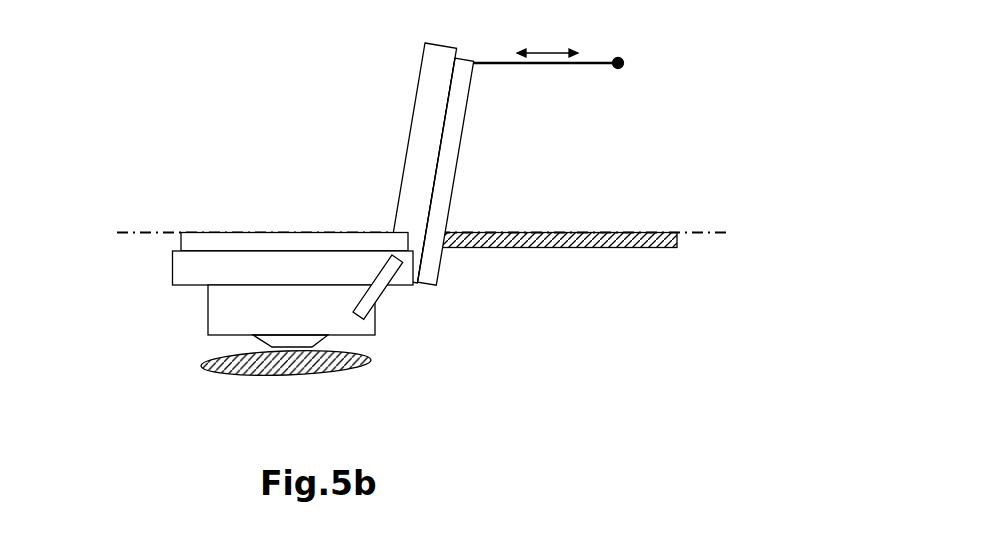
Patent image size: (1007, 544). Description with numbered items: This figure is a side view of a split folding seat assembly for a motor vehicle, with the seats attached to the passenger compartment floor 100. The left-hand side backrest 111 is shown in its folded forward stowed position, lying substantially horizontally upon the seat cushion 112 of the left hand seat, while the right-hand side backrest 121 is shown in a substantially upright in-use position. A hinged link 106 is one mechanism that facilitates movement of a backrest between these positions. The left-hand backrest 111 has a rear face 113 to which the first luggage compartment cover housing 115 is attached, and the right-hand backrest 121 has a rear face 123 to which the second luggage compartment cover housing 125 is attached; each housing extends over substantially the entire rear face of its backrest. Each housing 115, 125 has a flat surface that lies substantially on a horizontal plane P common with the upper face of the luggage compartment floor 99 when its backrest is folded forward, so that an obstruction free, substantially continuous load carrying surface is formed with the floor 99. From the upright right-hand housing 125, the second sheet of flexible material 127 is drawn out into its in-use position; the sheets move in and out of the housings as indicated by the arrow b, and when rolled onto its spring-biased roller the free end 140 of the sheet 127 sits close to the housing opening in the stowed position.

The luggage compartment floor 99 is at (572, 249).
The passenger compartment floor 100 is at (208, 367).
The hinged link 106 is at (388, 288).
The backrest 111 is at (172, 273).
The seat cushion 112 is at (207, 312).
The rear face 113 is at (323, 250).
The first luggage compartment cover housing 115 is at (180, 230).
The backrest 121 is at (412, 98).
The rear face 123 is at (441, 157).
The second luggage compartment cover housing 125 is at (472, 90).
The second sheet of flexible material 127 is at (487, 62).
The free end 140 is at (619, 58).
The horizontal plane P is at (117, 231).
The arrow b is at (547, 46).